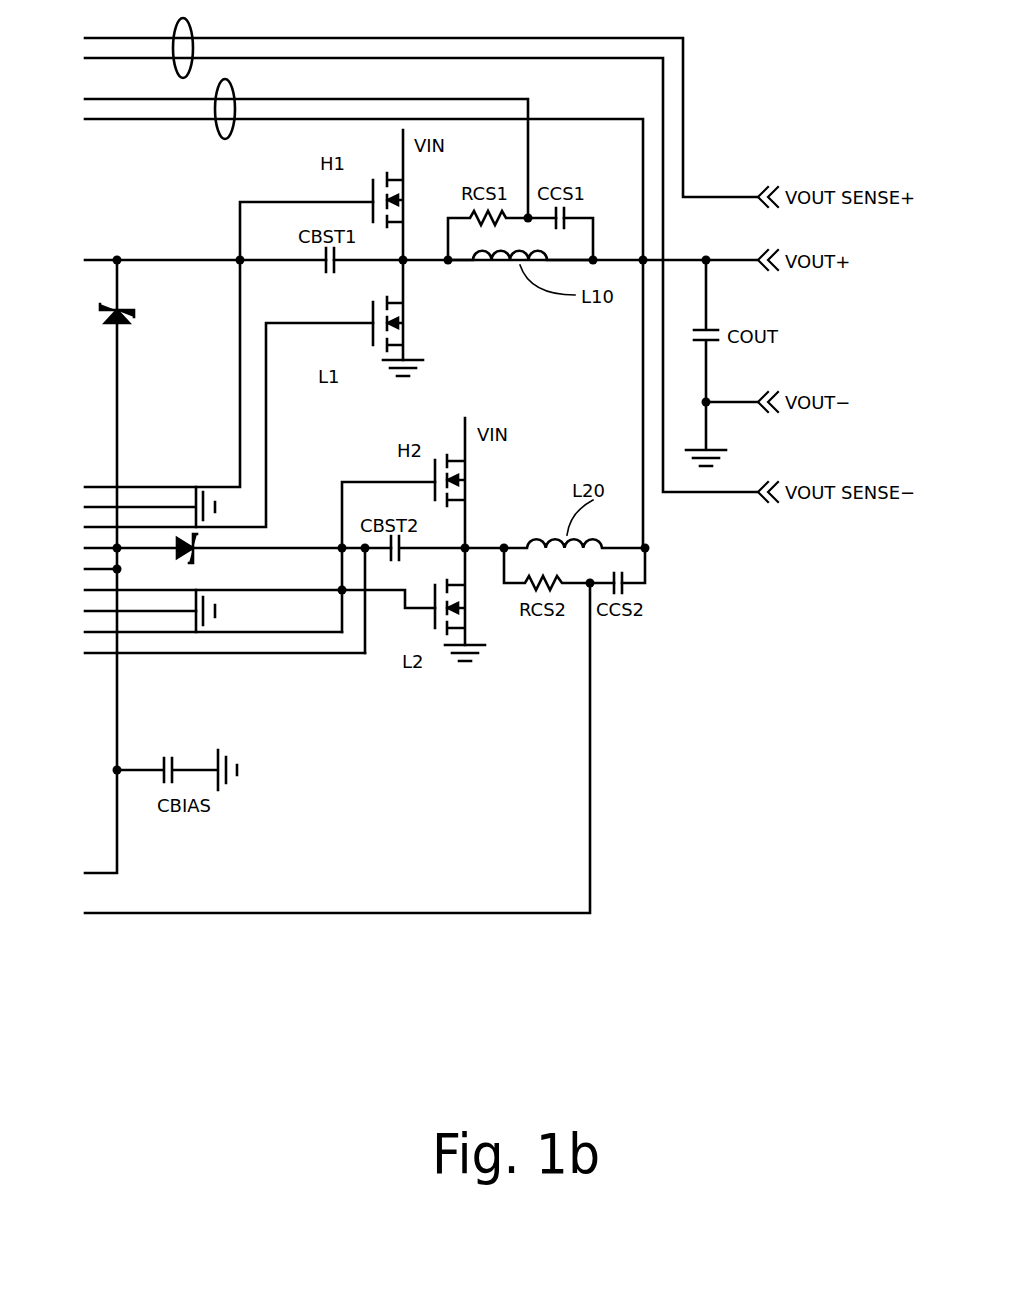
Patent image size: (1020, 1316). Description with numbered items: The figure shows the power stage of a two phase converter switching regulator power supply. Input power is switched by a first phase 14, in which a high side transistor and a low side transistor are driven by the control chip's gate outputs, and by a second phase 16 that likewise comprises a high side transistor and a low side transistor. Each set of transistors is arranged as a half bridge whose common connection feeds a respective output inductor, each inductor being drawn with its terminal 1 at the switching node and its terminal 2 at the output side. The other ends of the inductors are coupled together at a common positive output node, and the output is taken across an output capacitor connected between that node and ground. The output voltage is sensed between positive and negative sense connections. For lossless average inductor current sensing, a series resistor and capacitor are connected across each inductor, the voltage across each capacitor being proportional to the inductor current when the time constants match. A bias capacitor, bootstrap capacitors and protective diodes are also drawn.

The first phase 14 is at (440, 291).
The second phase 16 is at (488, 512).
The inductor terminal 1 is at (482, 393).
The inductor terminal 2 is at (613, 393).